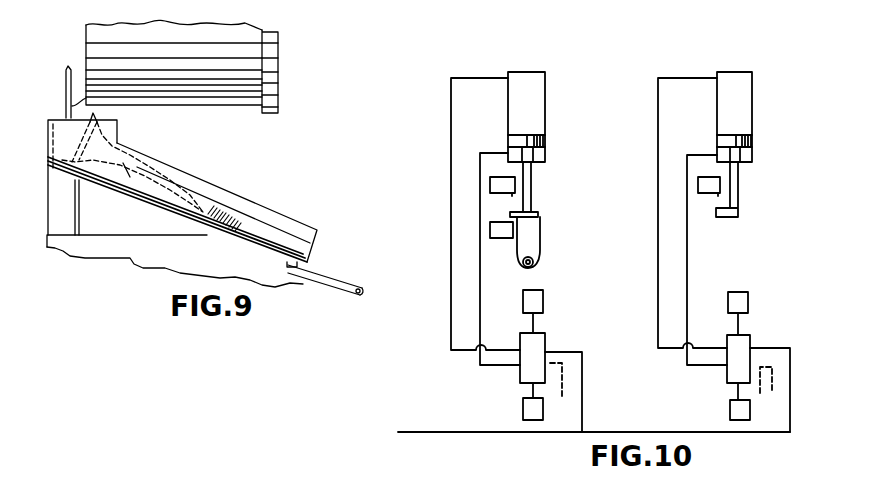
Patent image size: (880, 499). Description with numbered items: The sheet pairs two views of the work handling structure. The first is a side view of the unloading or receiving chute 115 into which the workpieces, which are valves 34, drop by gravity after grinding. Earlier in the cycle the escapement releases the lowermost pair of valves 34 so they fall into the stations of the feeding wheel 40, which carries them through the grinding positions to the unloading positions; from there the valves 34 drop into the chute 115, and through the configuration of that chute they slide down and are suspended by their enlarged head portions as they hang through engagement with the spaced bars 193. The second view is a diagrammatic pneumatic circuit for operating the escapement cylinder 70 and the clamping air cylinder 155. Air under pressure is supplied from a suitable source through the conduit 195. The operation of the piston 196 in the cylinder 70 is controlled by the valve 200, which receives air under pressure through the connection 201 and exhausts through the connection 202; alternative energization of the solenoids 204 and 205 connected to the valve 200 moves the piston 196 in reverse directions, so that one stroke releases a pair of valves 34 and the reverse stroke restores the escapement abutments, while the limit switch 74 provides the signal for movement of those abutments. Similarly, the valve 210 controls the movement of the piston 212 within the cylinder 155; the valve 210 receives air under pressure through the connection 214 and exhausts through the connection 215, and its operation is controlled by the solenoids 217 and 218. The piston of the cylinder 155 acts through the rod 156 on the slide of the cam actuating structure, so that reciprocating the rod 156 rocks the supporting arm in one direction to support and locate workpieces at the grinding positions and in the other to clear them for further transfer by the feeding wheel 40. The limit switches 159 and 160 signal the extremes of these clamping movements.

In FIG. 9, the valves 34 is at (80, 96).
In FIG. 9, the feeding wheel 40 is at (166, 67).
In FIG. 9, the receiving chute 115 is at (280, 226).
In FIG. 9, the spaced bars 193 is at (340, 283).
In FIG. 10, the air cylinder 155 is at (537, 92).
In FIG. 10, the piston 212 is at (540, 140).
In FIG. 10, the limit switch 160 is at (505, 185).
In FIG. 10, the limit switch 159 is at (500, 232).
In FIG. 10, the rod 156 is at (530, 240).
In FIG. 10, the solenoid 217 is at (535, 298).
In FIG. 10, the valve 210 is at (540, 340).
In FIG. 10, the connection 214 is at (567, 350).
In FIG. 10, the connection 215 is at (582, 363).
In FIG. 10, the solenoid 218 is at (523, 405).
In FIG. 10, the conduit 195 is at (420, 432).
In FIG. 10, the cylinder 70 is at (743, 92).
In FIG. 10, the limit switch 74 is at (708, 180).
In FIG. 10, the piston 196 is at (753, 142).
In FIG. 10, the solenoid 204 is at (738, 292).
In FIG. 10, the valve 200 is at (743, 340).
In FIG. 10, the connection 201 is at (765, 348).
In FIG. 10, the connection 202 is at (760, 397).
In FIG. 10, the solenoid 205 is at (730, 410).